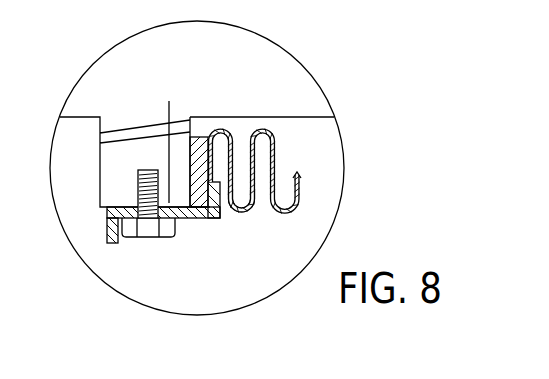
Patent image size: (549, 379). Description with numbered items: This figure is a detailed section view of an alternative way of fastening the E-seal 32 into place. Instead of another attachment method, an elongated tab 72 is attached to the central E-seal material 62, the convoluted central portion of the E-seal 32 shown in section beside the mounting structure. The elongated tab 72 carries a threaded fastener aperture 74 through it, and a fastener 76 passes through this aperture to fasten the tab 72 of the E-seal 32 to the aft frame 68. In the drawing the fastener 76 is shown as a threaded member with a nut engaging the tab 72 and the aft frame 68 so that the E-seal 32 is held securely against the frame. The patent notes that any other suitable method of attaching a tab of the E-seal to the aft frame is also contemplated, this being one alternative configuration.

The E-seal 32 is at (240, 127).
The central E-seal material 62 is at (246, 209).
The aft frame 68 is at (113, 134).
The elongated tab 72 is at (195, 213).
The threaded fastener aperture 74 is at (168, 140).
The fastener 76 is at (150, 230).